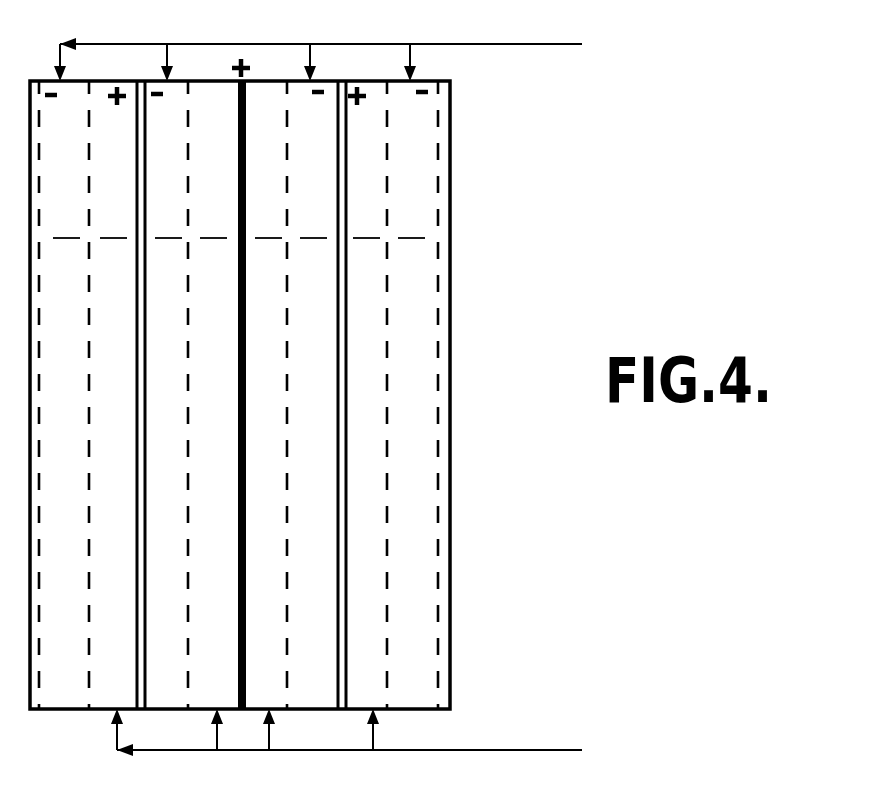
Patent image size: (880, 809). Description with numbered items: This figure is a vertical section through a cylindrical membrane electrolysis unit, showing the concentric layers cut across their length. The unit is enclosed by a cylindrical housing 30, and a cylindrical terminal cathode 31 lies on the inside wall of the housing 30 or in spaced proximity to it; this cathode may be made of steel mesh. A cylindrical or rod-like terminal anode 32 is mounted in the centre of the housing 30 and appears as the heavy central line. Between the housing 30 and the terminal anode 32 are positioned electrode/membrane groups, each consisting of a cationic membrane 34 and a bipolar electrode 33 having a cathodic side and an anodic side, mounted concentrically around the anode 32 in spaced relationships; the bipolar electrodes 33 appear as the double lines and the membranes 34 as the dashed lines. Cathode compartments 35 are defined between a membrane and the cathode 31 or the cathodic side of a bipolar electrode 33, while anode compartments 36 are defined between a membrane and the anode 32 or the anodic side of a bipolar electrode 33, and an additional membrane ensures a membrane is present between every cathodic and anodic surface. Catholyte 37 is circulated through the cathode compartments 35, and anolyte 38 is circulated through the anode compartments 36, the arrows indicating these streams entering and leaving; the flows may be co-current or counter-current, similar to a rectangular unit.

The cylindrical housing 30 is at (452, 628).
The terminal cathode 31 is at (440, 538).
The terminal anode 32 is at (245, 462).
The bipolar electrode 33 is at (348, 397).
The cationic membrane 34 is at (290, 288).
The cathode compartment 35 is at (239, 226).
The anode compartment 36 is at (240, 226).
The catholyte 37 is at (412, 56).
The anolyte 38 is at (424, 734).